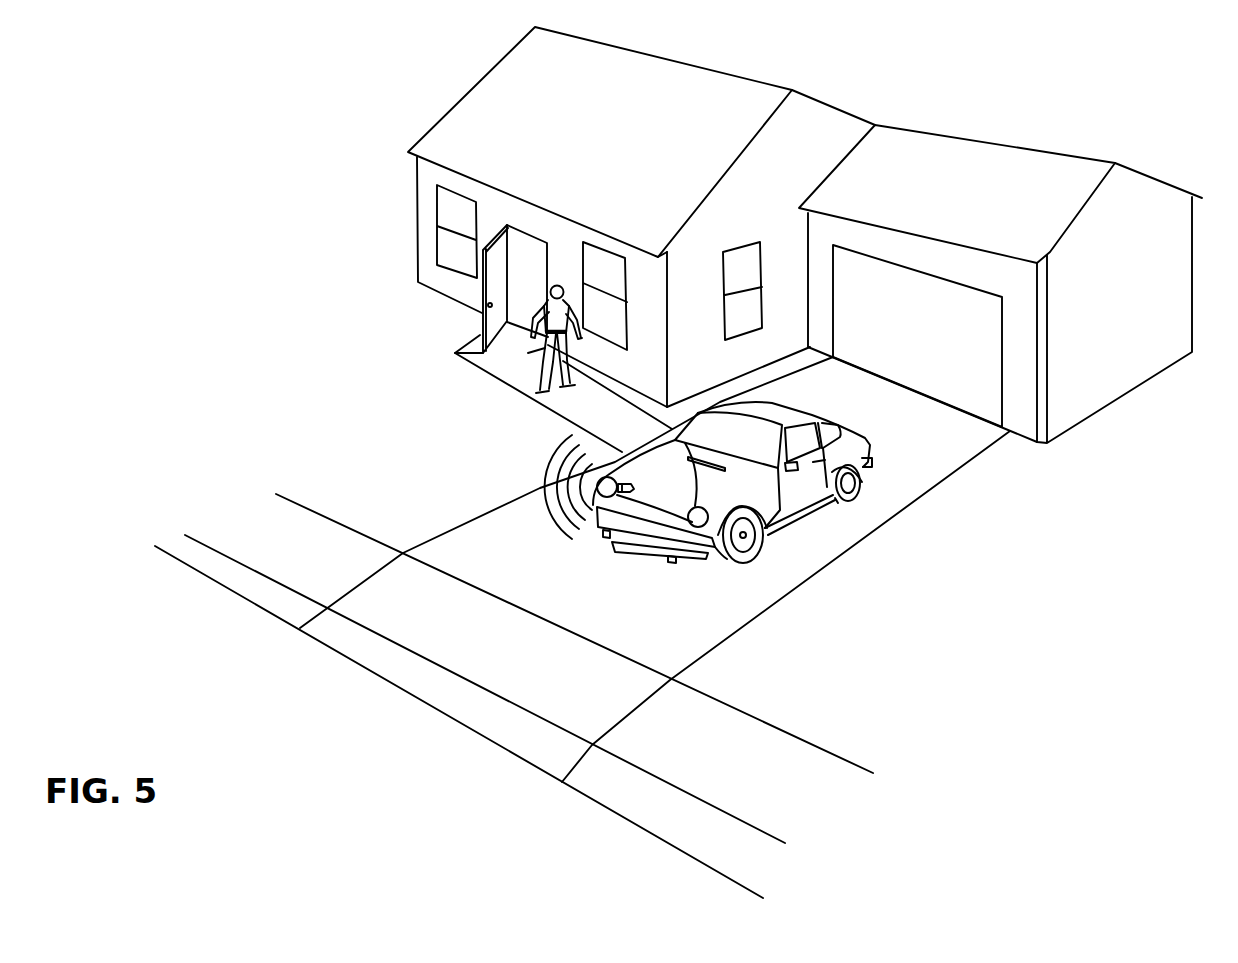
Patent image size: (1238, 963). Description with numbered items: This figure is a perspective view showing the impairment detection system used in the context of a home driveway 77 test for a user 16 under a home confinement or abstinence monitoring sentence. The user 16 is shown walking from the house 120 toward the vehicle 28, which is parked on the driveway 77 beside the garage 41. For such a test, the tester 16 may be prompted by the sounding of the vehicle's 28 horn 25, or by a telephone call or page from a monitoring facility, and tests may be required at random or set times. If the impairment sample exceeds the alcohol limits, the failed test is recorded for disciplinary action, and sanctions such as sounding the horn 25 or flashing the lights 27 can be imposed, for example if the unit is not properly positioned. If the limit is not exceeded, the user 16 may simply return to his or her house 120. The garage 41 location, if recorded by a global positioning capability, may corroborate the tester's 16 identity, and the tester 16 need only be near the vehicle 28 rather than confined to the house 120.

The house 120 is at (742, 77).
The user 16 is at (533, 378).
The garage 41 is at (1192, 324).
The driveway 77 is at (670, 632).
The vehicle 28 is at (824, 416).
The horn 25 is at (636, 490).
The lights 27 is at (619, 459).